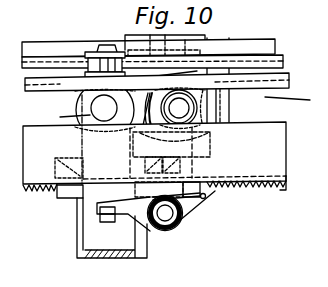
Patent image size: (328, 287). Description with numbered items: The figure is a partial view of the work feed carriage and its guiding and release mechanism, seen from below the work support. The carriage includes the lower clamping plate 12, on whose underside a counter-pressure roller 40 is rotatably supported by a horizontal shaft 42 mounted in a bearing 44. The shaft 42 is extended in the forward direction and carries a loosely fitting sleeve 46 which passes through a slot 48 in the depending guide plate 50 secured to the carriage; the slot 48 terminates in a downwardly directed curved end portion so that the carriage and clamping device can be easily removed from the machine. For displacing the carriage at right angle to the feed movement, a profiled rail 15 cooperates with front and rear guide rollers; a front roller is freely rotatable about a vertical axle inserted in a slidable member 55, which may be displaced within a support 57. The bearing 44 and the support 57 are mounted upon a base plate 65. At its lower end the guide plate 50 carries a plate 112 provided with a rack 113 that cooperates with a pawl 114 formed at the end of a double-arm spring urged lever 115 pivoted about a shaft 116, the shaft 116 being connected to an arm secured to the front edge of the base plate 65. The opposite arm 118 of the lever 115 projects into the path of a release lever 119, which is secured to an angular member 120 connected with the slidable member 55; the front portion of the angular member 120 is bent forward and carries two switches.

The lower clamping plate 12 is at (249, 50).
The profiled rail 15 is at (100, 62).
The counter-pressure roller 40 is at (197, 108).
The horizontal shaft 42 is at (212, 101).
The bearing 44 is at (219, 115).
The sleeve 46 is at (162, 72).
The slot 48 is at (295, 99).
The guide plate 50 is at (276, 80).
The slidable member 55 is at (104, 108).
The support 57 is at (66, 116).
The base plate 65 is at (80, 165).
The plate 112 is at (254, 183).
The rack 113 is at (279, 192).
The pawl 114 is at (219, 193).
The double-arm spring urged lever 115 is at (212, 200).
The shaft 116 is at (168, 226).
The arm 118 is at (128, 216).
The release lever 119 is at (103, 225).
The angular member 120 is at (95, 212).